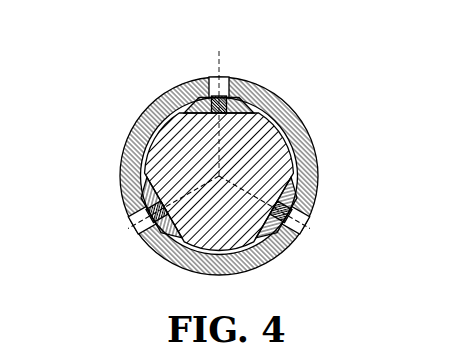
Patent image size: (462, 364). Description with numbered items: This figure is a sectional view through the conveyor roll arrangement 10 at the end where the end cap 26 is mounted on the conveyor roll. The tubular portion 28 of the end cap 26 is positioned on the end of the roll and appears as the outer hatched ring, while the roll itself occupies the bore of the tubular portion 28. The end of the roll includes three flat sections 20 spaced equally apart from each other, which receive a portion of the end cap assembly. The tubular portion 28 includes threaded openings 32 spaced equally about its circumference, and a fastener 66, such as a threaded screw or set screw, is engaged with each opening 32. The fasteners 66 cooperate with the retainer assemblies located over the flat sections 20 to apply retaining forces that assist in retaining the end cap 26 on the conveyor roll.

The conveyor roll arrangement 10 is at (243, 164).
The flat section 20 is at (272, 89).
The end cap 26 is at (277, 178).
The tubular portion 28 is at (318, 148).
The opening 32 is at (285, 77).
The fastener 66 is at (214, 76).